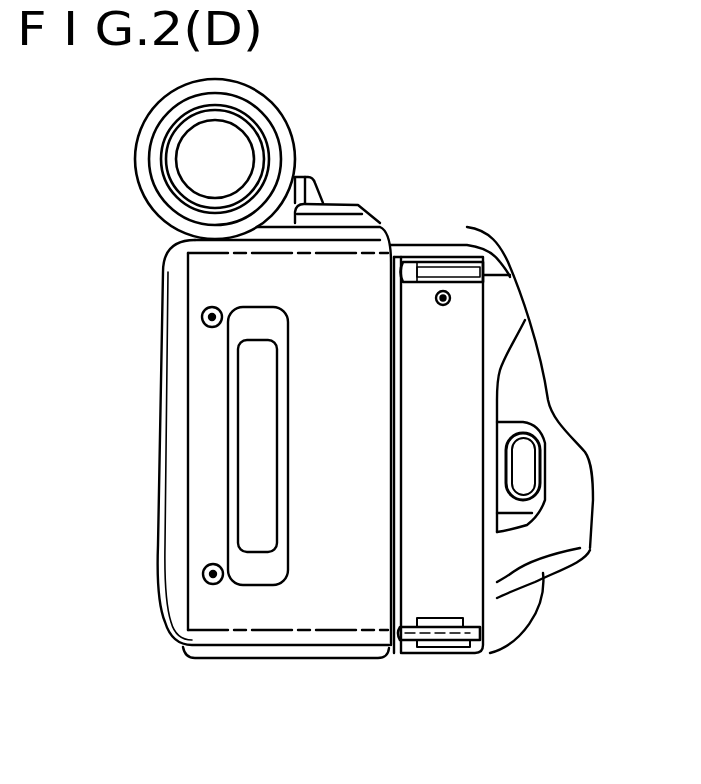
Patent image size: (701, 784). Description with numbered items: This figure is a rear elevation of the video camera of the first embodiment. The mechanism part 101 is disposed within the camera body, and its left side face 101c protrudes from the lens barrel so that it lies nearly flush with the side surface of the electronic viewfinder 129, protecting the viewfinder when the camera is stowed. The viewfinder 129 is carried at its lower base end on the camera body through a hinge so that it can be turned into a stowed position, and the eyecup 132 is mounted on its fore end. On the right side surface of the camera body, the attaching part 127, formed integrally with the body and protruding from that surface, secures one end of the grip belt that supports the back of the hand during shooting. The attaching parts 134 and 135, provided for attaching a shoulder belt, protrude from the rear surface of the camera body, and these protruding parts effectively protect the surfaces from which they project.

The mechanism part 101 is at (413, 257).
The left side face 101c is at (157, 548).
The attaching part 127 is at (584, 480).
The electronic viewfinder 129 is at (285, 124).
The eyecup 132 is at (140, 133).
The attaching part 134 is at (467, 273).
The attaching part 135 is at (477, 657).